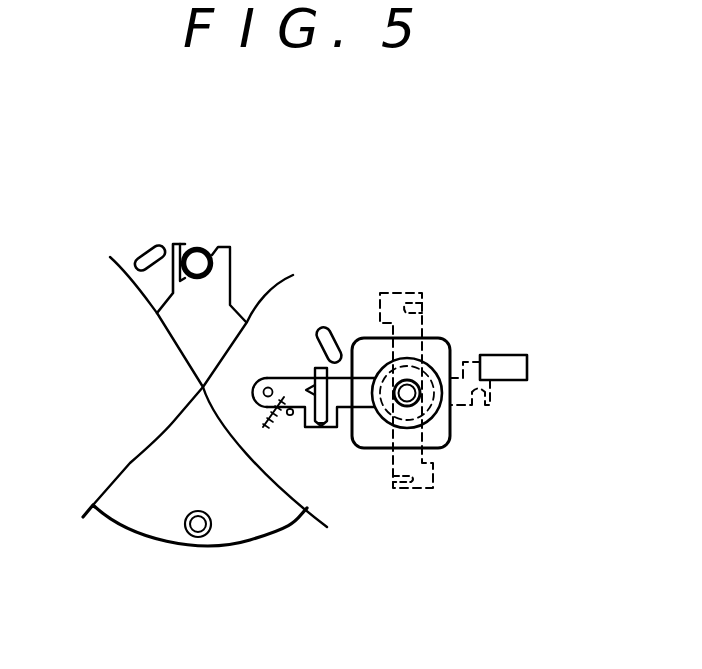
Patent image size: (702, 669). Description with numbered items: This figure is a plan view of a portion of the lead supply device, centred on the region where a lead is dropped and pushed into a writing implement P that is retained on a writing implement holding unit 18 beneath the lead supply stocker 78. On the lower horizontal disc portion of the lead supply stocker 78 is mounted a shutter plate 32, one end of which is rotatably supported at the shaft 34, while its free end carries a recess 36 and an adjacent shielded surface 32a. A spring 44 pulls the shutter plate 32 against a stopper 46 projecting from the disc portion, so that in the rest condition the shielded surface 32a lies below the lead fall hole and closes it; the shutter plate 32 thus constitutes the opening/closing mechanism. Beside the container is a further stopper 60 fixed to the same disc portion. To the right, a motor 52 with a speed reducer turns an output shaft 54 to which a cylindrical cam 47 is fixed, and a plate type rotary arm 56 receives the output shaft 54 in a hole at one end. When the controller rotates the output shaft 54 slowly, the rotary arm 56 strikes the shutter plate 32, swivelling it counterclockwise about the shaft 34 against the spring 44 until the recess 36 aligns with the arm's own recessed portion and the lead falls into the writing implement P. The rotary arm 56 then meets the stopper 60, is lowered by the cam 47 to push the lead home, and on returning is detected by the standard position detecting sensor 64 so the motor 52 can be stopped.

The writing implement holding unit 18 is at (180, 230).
The writing implement P is at (197, 253).
The stopper 60 is at (146, 254).
The shutter plate 32 is at (365, 288).
The shaft 34 is at (268, 377).
The shielded surface 32a is at (342, 377).
The recess 36 is at (321, 427).
The spring 44 is at (263, 427).
The stopper 46 is at (289, 416).
The rotary arm 56 is at (380, 338).
The motor 52 is at (438, 337).
The output shaft 54 is at (410, 388).
The cylindrical cam 47 is at (432, 418).
The standard position detecting sensor 64 is at (528, 372).
The lead supply stocker 78 is at (148, 526).